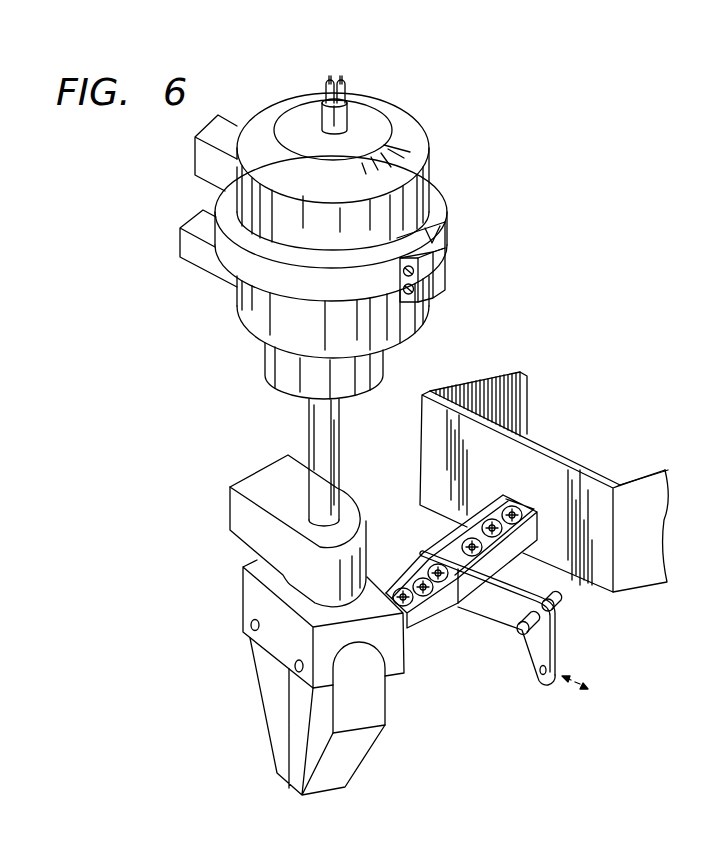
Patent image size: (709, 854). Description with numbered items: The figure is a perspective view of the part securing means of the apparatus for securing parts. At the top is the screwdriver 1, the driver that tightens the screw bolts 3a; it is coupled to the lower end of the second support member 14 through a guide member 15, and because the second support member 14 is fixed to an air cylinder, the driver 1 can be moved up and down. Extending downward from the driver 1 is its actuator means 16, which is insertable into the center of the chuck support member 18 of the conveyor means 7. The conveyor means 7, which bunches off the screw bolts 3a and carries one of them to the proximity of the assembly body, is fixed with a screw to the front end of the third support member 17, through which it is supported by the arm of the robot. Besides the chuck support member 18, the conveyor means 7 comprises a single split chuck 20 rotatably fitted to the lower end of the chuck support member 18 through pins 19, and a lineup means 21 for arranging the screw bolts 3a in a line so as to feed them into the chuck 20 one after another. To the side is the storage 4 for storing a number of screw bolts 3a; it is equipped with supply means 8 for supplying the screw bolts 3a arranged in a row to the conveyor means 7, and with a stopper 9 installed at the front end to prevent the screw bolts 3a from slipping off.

The screwdriver 1 is at (247, 322).
The screw bolts 3a is at (388, 585).
The storage 4 is at (587, 585).
The conveyor means 7 is at (243, 597).
The supply means 8 is at (513, 558).
The stopper 9 is at (495, 608).
The second support member 14 is at (193, 223).
The guide member 15 is at (230, 262).
The actuator means 16 is at (341, 428).
The third support member 17 is at (243, 530).
The chuck support member 18 is at (397, 667).
The pins 19 is at (251, 625).
The split chuck 20 is at (375, 712).
The lineup means 21 is at (427, 623).